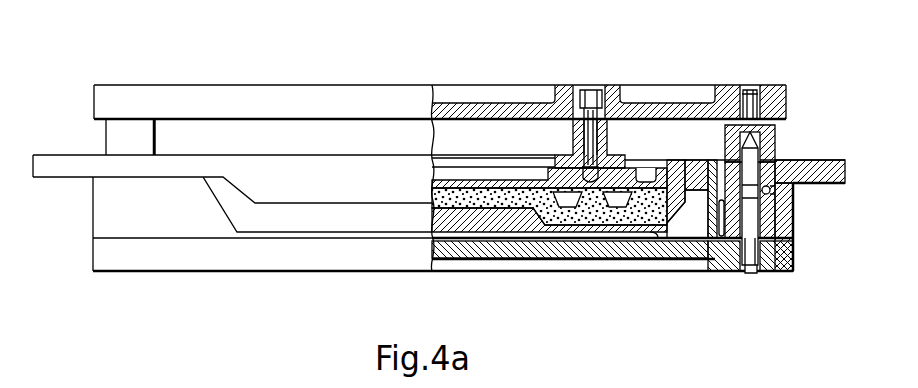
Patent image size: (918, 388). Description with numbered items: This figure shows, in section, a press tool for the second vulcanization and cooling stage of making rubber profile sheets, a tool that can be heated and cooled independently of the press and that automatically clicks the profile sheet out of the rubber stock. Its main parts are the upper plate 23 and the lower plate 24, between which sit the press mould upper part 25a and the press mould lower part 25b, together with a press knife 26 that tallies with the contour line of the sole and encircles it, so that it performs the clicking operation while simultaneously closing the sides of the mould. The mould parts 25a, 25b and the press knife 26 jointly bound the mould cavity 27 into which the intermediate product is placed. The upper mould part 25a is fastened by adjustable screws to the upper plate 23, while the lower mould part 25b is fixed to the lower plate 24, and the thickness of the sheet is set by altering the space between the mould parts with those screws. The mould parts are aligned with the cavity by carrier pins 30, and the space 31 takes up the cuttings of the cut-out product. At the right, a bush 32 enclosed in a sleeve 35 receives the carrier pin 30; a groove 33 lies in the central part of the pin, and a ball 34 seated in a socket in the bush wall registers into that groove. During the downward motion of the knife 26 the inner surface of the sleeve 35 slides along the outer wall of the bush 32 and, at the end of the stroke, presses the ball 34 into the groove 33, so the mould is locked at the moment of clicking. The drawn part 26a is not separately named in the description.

The upper plate 23 is at (535, 103).
The lower plate 24 is at (593, 245).
The press mould upper part 25a is at (528, 197).
The press mould lower part 25b is at (492, 187).
The press knife 26 is at (675, 150).
The support piece 26a is at (678, 267).
The mould cavity 27 is at (470, 190).
The carrier pin 30 is at (757, 273).
The space 31 is at (692, 228).
The bush 32 is at (775, 138).
The groove 33 is at (748, 90).
The ball 34 is at (795, 205).
The sleeve 35 is at (795, 240).